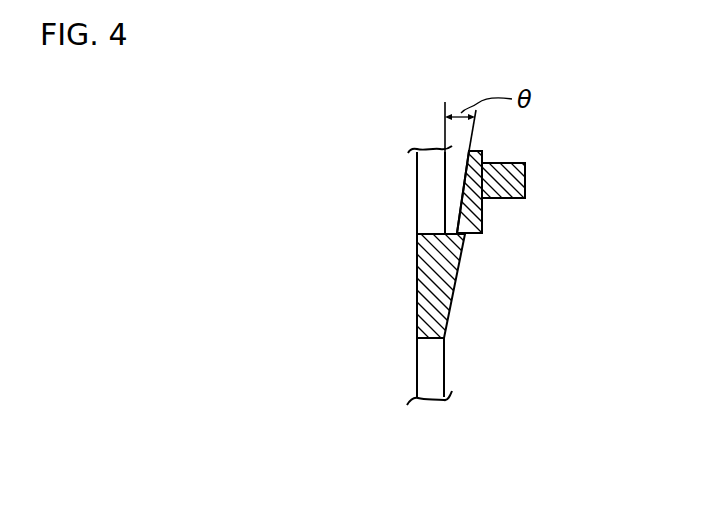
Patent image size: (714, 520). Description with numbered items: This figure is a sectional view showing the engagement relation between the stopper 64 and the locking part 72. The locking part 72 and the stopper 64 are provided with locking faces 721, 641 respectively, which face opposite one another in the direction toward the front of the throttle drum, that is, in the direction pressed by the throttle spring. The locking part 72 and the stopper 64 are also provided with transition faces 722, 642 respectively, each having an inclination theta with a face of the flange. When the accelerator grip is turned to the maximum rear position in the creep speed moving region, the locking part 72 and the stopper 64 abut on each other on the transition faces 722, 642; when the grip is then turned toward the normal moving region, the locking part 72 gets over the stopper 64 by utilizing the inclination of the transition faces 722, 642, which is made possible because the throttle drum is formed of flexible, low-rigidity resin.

The stopper 64 is at (525, 186).
The locking face 641 is at (477, 233).
The transition face 642 is at (465, 188).
The locking part 72 is at (425, 365).
The locking face 721 is at (427, 236).
The transition face 722 is at (456, 283).